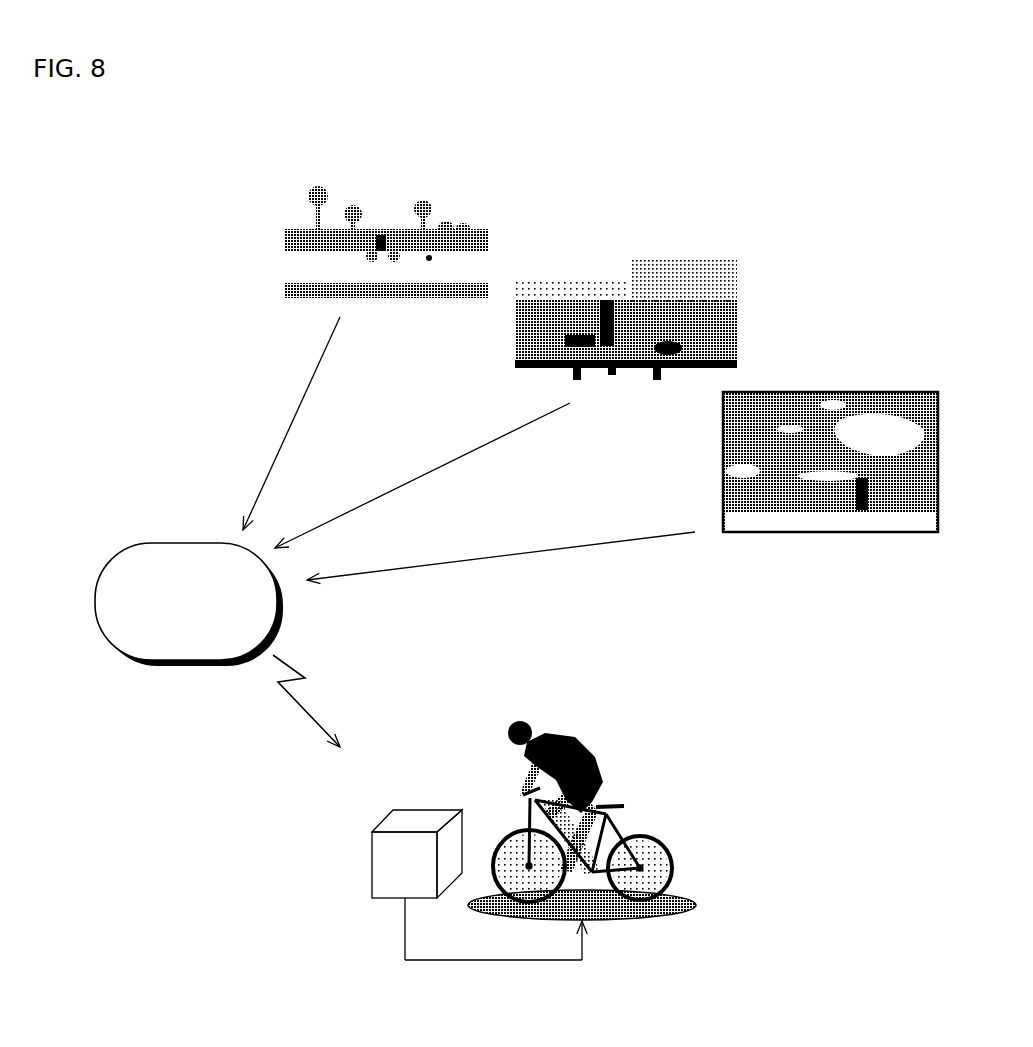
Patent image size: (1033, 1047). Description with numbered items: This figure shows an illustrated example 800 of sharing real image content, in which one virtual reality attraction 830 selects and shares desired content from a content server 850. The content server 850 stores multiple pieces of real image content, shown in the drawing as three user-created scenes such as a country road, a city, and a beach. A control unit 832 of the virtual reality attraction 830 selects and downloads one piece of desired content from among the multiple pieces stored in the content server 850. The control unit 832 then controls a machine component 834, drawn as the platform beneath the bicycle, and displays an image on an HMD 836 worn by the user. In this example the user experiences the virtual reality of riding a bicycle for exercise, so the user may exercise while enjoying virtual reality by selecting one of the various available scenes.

The illustrated example 800 is at (105, 192).
The content server 850 is at (180, 660).
The virtual reality attraction 830 is at (525, 1009).
The control unit 832 is at (372, 873).
The machine component 834 is at (638, 920).
The HMD 836 is at (505, 746).